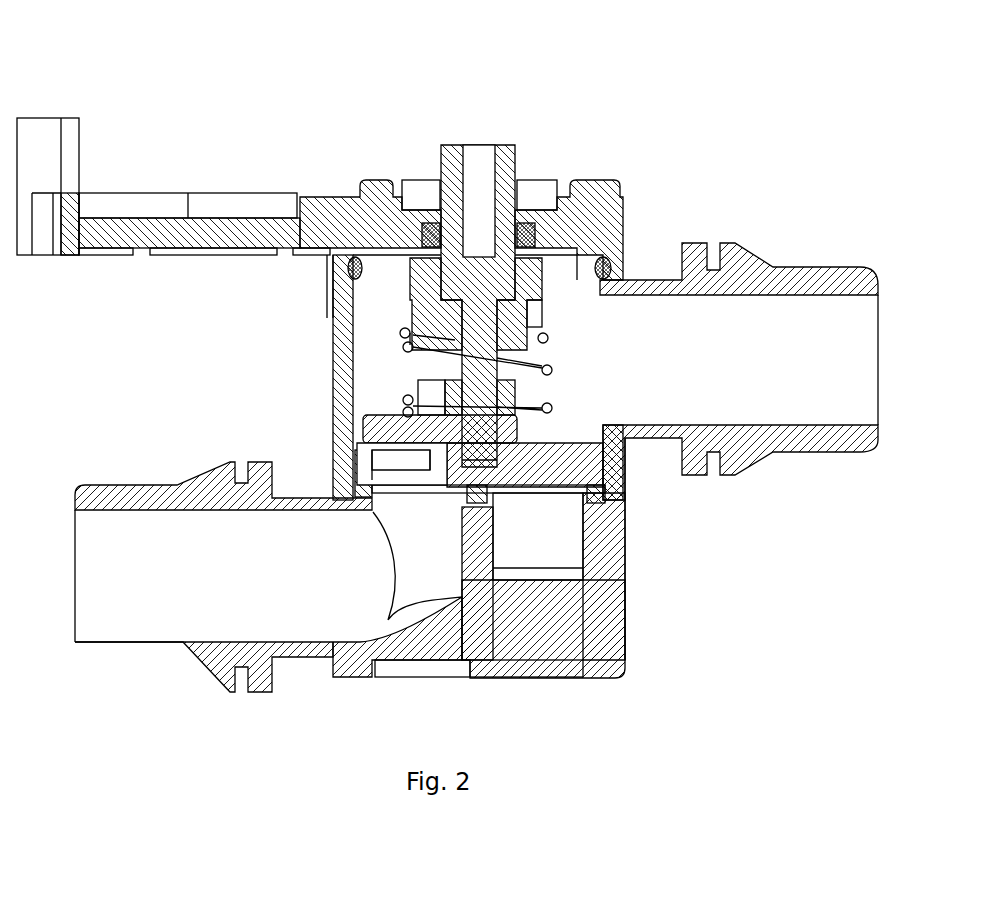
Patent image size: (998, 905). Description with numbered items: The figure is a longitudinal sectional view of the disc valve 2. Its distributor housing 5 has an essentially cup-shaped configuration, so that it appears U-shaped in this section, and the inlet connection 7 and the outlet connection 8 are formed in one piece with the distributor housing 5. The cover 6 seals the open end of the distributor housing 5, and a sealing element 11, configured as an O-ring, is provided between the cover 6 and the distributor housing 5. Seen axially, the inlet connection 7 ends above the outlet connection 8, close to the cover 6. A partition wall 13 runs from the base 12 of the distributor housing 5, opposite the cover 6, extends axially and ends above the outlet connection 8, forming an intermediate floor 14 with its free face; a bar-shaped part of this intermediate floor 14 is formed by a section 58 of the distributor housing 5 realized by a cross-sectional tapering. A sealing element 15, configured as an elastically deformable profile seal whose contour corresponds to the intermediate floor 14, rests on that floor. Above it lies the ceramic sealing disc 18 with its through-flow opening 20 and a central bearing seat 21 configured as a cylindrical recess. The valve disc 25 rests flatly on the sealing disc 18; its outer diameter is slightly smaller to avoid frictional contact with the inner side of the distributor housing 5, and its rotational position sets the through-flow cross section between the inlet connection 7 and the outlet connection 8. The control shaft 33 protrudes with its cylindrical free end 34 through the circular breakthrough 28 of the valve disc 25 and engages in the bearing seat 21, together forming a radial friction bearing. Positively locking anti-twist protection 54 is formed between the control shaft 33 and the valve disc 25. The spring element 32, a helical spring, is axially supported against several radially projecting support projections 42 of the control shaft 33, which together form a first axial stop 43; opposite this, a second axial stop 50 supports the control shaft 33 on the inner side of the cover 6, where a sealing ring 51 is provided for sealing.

The disc valve 2 is at (888, 92).
The distributor housing 5 is at (628, 637).
The cover 6 is at (120, 200).
The inlet connection 7 is at (820, 273).
The outlet connection 8 is at (132, 667).
The sealing element 11 is at (603, 237).
The base 12 is at (628, 669).
The partition wall 13 is at (473, 547).
The intermediate floor 14 is at (628, 494).
The sealing element 15 is at (602, 510).
The sealing disc 18 is at (335, 470).
The through-flow opening 20 is at (345, 471).
The bearing seat 21 is at (503, 453).
The valve disc 25 is at (383, 433).
The breakthrough 28 is at (550, 410).
The spring element 32 is at (555, 345).
The control shaft 33 is at (470, 298).
The free end 34 is at (517, 430).
The support projections 42 is at (423, 303).
The first axial stop 43 is at (403, 348).
The second axial stop 50 is at (410, 252).
The sealing ring 51 is at (520, 257).
The anti-twist protection 54 is at (405, 388).
The section 58 is at (353, 493).